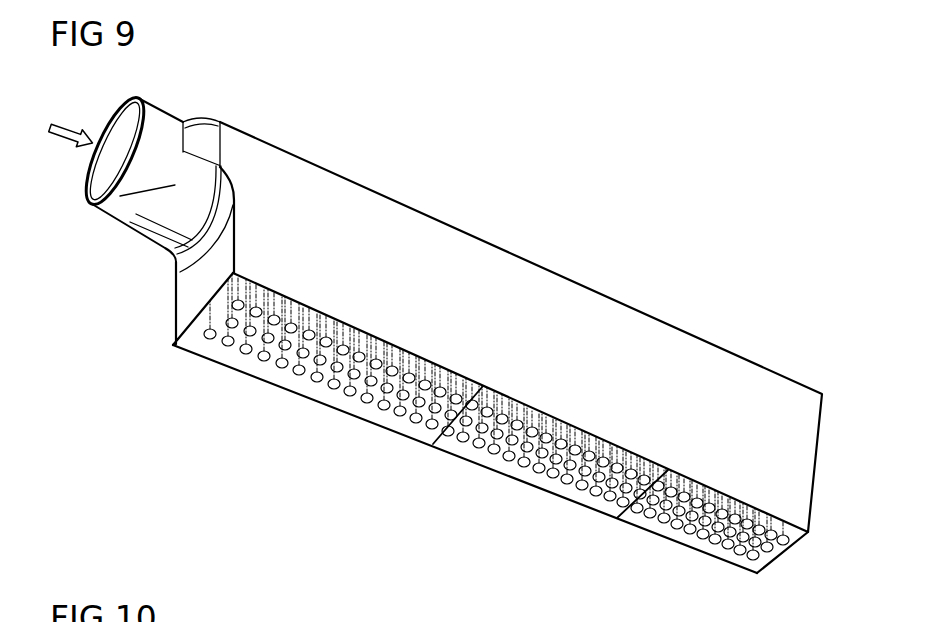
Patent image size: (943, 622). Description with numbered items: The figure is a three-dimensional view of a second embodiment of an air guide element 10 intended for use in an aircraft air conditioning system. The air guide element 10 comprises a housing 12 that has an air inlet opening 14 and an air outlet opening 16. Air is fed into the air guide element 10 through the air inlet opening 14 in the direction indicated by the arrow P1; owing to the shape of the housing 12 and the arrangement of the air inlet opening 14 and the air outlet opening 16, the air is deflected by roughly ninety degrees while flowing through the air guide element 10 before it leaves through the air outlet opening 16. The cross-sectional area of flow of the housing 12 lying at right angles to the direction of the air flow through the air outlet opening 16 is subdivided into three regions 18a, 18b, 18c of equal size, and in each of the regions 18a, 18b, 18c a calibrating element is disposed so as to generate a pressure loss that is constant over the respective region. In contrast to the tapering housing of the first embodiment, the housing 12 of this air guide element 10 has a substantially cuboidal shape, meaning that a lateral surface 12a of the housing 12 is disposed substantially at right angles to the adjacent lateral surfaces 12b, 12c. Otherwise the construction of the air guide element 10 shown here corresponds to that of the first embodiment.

The air guide element 10 is at (650, 207).
The housing 12 is at (363, 206).
The lateral surface 12a is at (656, 320).
The lateral surface 12b is at (185, 302).
The lateral surface 12c is at (795, 549).
The air inlet opening 14 is at (106, 178).
The air outlet opening 16 is at (733, 553).
The region 18a is at (262, 418).
The region 18b is at (503, 506).
The region 18c is at (684, 566).
The arrow P1 is at (71, 133).